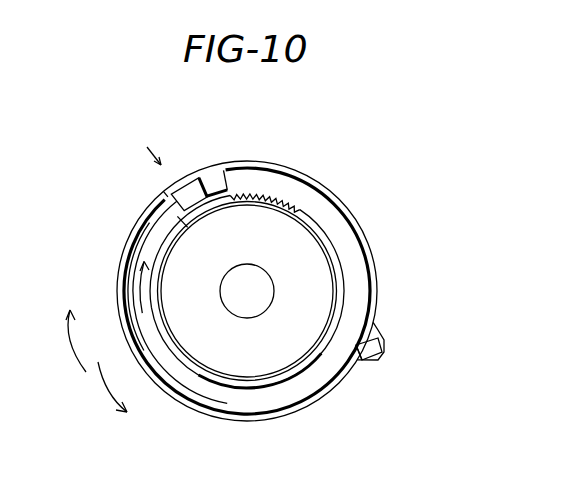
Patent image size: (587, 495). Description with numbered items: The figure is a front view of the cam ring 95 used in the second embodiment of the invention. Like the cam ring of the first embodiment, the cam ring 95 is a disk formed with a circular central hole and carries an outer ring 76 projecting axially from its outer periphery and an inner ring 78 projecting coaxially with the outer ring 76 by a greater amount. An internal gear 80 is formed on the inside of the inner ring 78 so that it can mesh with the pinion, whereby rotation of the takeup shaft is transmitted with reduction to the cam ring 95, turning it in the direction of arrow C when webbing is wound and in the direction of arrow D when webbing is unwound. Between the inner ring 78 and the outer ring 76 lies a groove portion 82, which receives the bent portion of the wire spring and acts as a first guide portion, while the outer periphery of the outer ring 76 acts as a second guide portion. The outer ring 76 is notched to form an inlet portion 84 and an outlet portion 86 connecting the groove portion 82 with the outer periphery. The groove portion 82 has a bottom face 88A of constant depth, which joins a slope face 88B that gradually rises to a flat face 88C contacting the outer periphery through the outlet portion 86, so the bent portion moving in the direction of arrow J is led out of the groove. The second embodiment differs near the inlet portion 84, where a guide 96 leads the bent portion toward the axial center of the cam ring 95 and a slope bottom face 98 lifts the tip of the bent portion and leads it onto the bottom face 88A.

The outer ring 76 is at (129, 252).
The inner ring 78 is at (226, 195).
The internal gear 80 is at (238, 210).
The groove portion 82 is at (201, 398).
The inlet portion 84 is at (366, 358).
The outlet portion 86 is at (178, 188).
The bottom face 88A is at (298, 190).
The slope face 88B is at (172, 225).
The flat face 88C is at (186, 206).
The cam ring 95 is at (138, 222).
The guide 96 is at (380, 355).
The slope bottom face 98 is at (370, 340).